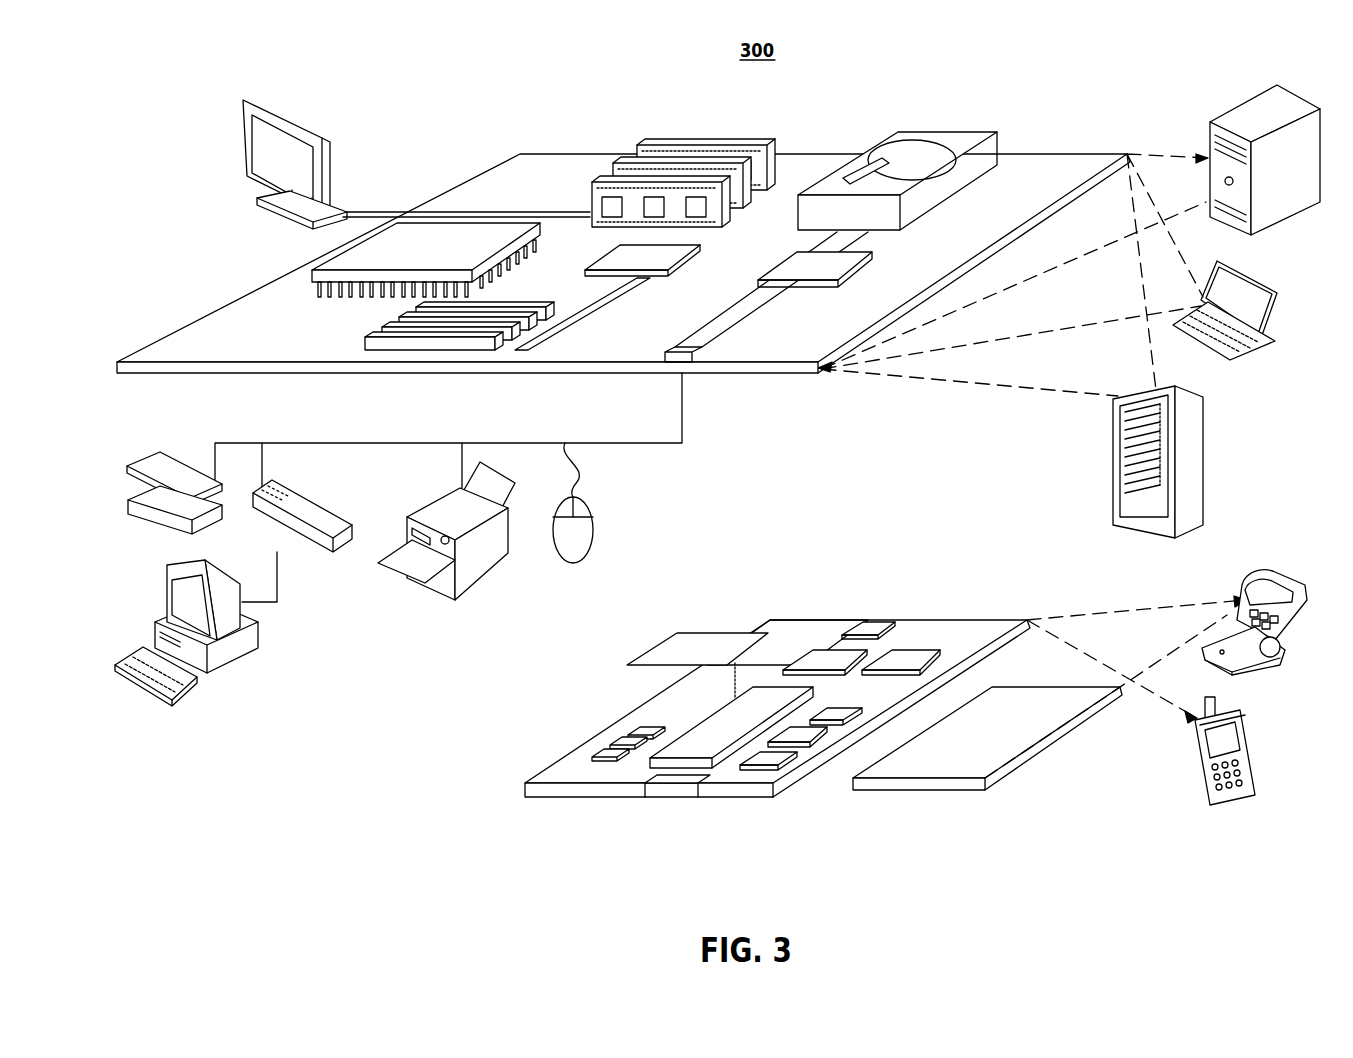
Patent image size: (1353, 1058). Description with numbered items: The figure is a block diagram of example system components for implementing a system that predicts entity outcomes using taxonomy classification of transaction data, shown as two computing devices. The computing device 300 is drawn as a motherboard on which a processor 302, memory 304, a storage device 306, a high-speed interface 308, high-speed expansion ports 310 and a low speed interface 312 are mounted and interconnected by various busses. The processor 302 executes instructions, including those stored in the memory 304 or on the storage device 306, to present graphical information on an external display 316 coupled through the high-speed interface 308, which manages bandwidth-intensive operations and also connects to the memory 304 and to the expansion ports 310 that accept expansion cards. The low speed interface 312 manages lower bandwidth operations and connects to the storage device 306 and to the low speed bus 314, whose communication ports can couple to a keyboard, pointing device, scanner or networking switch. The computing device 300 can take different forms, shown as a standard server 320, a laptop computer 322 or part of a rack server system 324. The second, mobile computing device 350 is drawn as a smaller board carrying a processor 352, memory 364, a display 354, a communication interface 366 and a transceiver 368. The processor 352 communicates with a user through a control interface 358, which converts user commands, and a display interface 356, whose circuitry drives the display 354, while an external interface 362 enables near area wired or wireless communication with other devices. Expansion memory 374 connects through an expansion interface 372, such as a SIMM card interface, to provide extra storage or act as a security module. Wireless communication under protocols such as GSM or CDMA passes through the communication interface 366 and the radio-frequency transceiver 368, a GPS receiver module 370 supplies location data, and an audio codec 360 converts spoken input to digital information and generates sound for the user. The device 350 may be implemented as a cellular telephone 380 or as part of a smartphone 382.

The computing device 300 is at (441, 118).
The processor 302 is at (313, 277).
The memory 304 is at (688, 145).
The storage device 306 is at (888, 132).
The high-speed interface 308 is at (620, 255).
The high-speed expansion ports 310 is at (380, 333).
The low speed interface 312 is at (797, 253).
The low speed bus 314 is at (720, 373).
The display 316 is at (243, 102).
The standard server 320 is at (1212, 130).
The laptop computer 322 is at (1228, 363).
The rack server system 324 is at (1115, 480).
The computing device 350 is at (498, 800).
The processor 352 is at (703, 752).
The display 354 is at (945, 770).
The display interface 356 is at (772, 760).
The control interface 358 is at (808, 738).
The audio codec 360 is at (833, 715).
The external interface 362 is at (668, 787).
The memory 364 is at (612, 742).
The communication interface 366 is at (818, 657).
The transceiver 368 is at (900, 658).
The GPS receiver module 370 is at (870, 620).
The expansion interface 372 is at (745, 650).
The expansion memory 374 is at (670, 634).
The cellular telephone 380 is at (1255, 573).
The smartphone 382 is at (1196, 752).